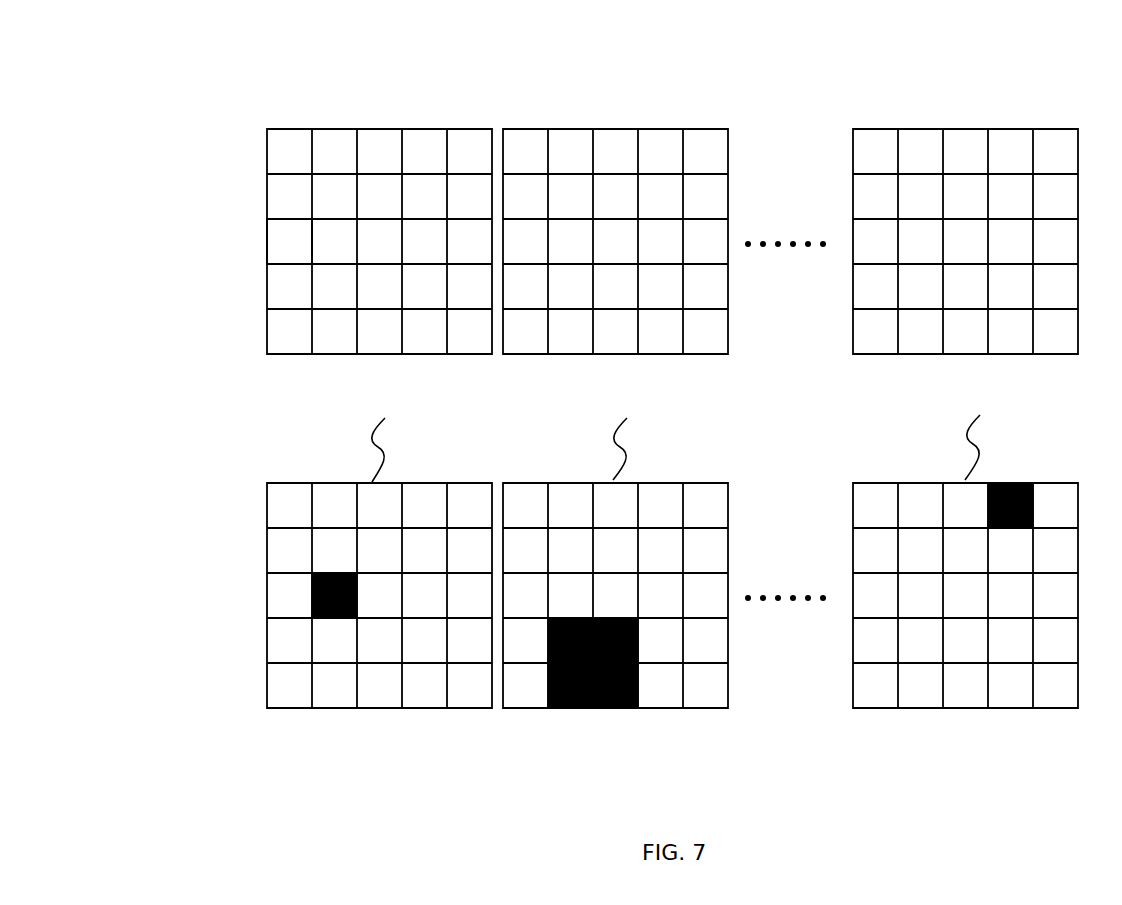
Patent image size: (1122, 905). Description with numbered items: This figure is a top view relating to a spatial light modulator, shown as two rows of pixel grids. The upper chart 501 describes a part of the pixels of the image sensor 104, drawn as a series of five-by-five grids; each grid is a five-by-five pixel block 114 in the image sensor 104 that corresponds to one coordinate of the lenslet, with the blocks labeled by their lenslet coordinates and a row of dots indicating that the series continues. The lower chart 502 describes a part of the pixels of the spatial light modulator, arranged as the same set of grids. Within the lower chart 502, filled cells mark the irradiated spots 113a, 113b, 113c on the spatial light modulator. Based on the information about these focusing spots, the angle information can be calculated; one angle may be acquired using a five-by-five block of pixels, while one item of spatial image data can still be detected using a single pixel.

The block of 5×5 pixel 114 is at (372, 128).
The image sensor 104 is at (265, 233).
The upper chart 501 is at (187, 129).
The lower chart 502 is at (187, 477).
The irradiated spot 113a is at (333, 618).
The irradiated spot 113b is at (562, 708).
The irradiated spot 113c is at (1025, 480).